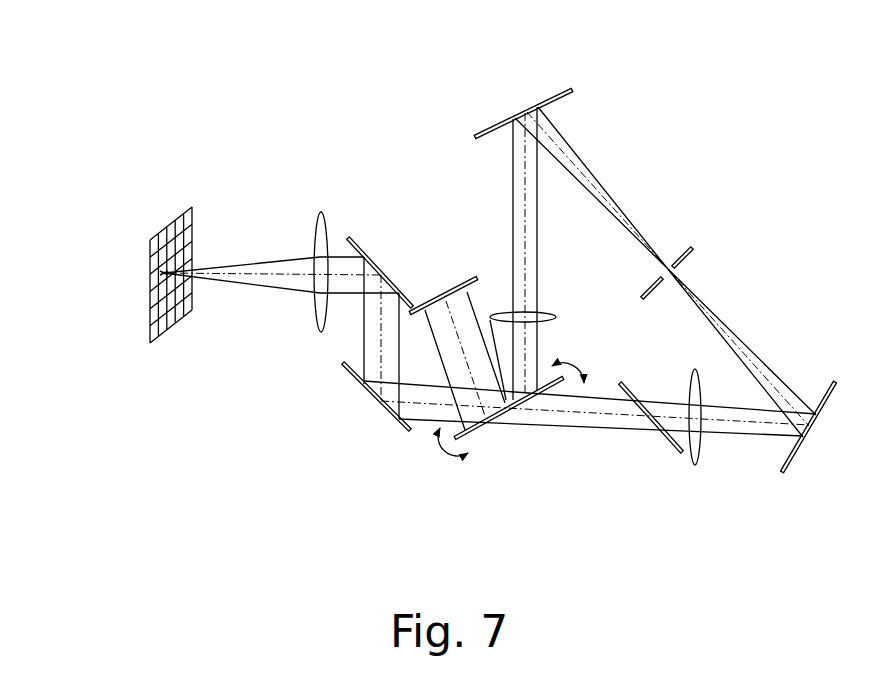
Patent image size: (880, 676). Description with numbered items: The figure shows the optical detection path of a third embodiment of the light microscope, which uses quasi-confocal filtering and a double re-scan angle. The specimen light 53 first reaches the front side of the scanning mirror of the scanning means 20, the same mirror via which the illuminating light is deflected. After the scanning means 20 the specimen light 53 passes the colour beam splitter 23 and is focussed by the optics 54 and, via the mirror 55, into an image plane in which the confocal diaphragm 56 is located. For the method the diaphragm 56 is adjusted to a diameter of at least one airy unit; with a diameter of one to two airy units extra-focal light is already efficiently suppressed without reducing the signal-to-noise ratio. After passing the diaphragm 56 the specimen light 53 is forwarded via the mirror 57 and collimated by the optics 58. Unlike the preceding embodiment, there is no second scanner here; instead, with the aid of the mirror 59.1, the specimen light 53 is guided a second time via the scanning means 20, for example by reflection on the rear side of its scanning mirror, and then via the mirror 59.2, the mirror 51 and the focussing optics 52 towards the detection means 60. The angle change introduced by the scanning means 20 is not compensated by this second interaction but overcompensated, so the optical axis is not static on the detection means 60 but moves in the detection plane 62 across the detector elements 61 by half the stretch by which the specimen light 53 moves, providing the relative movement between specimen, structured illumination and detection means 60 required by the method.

The scanning means 20 is at (433, 467).
The colour beam splitter 23 is at (672, 445).
The mirror 51 is at (373, 258).
The focussing optics 52 is at (323, 212).
The specimen light 53 is at (263, 258).
The optics 54 is at (700, 345).
The mirror 55 is at (790, 470).
The confocal diaphragm 56 is at (685, 248).
The mirror 57 is at (557, 88).
The optics 58 is at (553, 317).
The mirror 59.1 is at (447, 280).
The mirror 59.2 is at (380, 407).
The detection means 60 is at (103, 262).
The detector elements 61 is at (148, 276).
The detection plane 62 is at (143, 228).